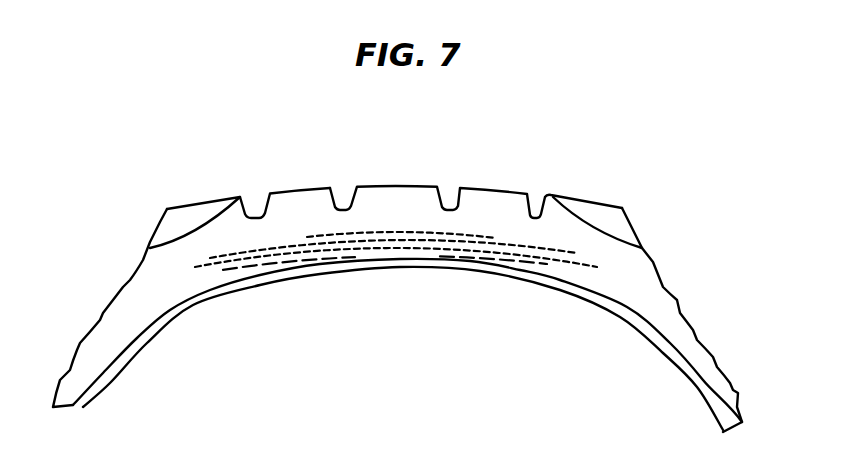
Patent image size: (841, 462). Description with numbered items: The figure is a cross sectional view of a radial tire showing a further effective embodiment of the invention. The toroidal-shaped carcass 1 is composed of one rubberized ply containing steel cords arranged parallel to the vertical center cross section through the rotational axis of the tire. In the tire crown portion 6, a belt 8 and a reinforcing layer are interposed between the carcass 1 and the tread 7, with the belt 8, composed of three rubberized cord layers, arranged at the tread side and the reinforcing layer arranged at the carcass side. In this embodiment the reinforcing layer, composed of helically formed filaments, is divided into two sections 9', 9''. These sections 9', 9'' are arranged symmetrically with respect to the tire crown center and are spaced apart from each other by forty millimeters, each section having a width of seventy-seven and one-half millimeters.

The carcass 1 is at (627, 307).
The tire crown portion 6 is at (303, 197).
The tread 7 is at (418, 202).
The belt 8 is at (192, 268).
The reinforcing layer section 9' is at (396, 291).
The reinforcing layer section 9'' is at (289, 296).